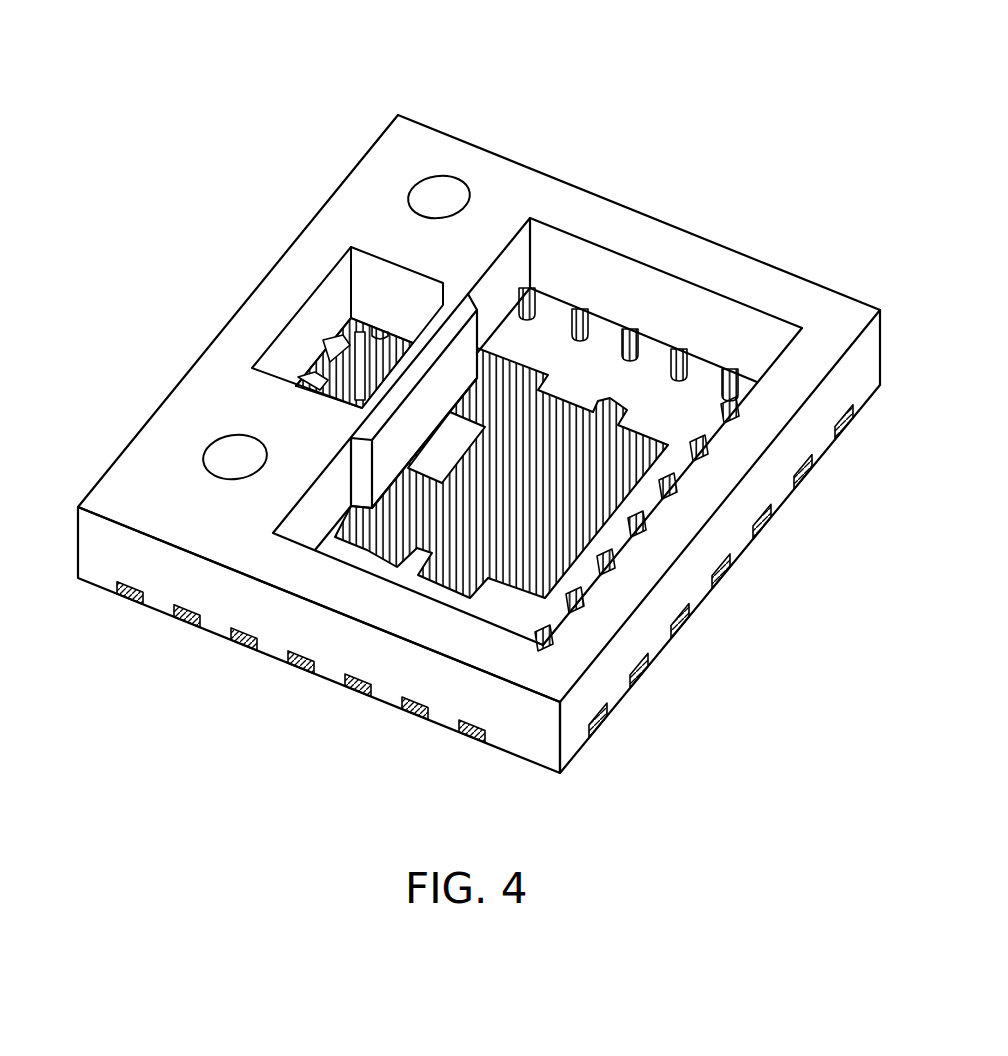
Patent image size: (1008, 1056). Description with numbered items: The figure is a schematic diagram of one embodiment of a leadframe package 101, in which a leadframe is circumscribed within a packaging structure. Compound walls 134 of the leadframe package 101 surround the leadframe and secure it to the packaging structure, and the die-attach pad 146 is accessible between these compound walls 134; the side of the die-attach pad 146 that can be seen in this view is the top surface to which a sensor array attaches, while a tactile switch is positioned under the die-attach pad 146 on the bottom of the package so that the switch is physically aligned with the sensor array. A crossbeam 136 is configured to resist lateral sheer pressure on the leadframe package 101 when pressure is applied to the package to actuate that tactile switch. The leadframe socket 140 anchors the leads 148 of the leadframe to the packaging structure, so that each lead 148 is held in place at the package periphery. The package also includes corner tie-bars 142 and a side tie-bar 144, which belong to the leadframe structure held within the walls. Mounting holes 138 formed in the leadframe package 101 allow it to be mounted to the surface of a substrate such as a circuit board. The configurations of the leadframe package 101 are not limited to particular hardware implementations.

The leadframe package 101 is at (166, 38).
The compound walls 134 is at (668, 243).
The crossbeam 136 is at (430, 318).
The mounting holes 138 is at (460, 177).
The leadframe socket 140 is at (142, 598).
The corner tie-bars 142 is at (488, 348).
The side tie-bar 144 is at (618, 535).
The die-attach pad 146 is at (523, 432).
The lead 148 is at (118, 583).